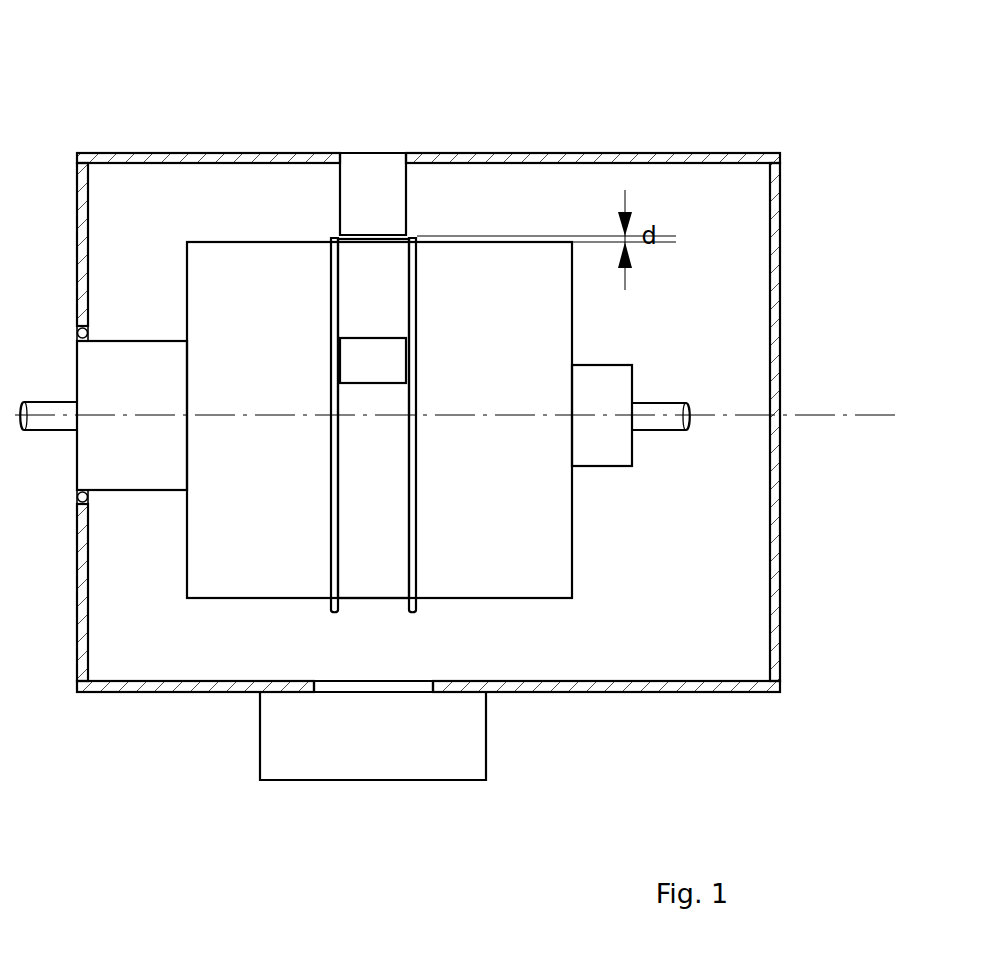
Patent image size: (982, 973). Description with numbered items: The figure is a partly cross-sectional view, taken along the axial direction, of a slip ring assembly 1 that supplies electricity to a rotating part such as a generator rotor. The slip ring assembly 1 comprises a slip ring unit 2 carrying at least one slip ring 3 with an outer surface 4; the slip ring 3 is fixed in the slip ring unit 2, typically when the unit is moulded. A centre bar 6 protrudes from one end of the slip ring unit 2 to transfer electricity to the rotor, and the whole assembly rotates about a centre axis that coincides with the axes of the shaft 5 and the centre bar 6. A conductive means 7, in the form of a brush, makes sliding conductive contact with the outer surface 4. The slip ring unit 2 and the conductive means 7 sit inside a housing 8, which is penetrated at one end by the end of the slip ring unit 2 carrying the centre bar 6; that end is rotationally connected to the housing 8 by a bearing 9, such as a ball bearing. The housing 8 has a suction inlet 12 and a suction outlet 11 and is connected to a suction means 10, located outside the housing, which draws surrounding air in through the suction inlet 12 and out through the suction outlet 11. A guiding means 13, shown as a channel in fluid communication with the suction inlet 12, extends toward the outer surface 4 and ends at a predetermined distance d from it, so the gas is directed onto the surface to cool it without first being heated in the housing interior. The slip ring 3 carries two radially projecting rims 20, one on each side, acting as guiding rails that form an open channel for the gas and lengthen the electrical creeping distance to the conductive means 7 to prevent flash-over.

The slip ring assembly 1 is at (184, 88).
The slip ring unit 2 is at (270, 555).
The slip ring 3 is at (362, 547).
The outer surface 4 is at (370, 470).
The shaft 5 is at (652, 418).
The centre bar 6 is at (50, 418).
The conductive means 7 is at (368, 363).
The housing 8 is at (650, 155).
The bearing 9 is at (77, 332).
The suction means 10 is at (296, 745).
The suction outlet 11 is at (380, 688).
The suction inlet 12 is at (358, 163).
The guiding means 13 is at (378, 202).
The radially projecting rims 20 is at (330, 297).